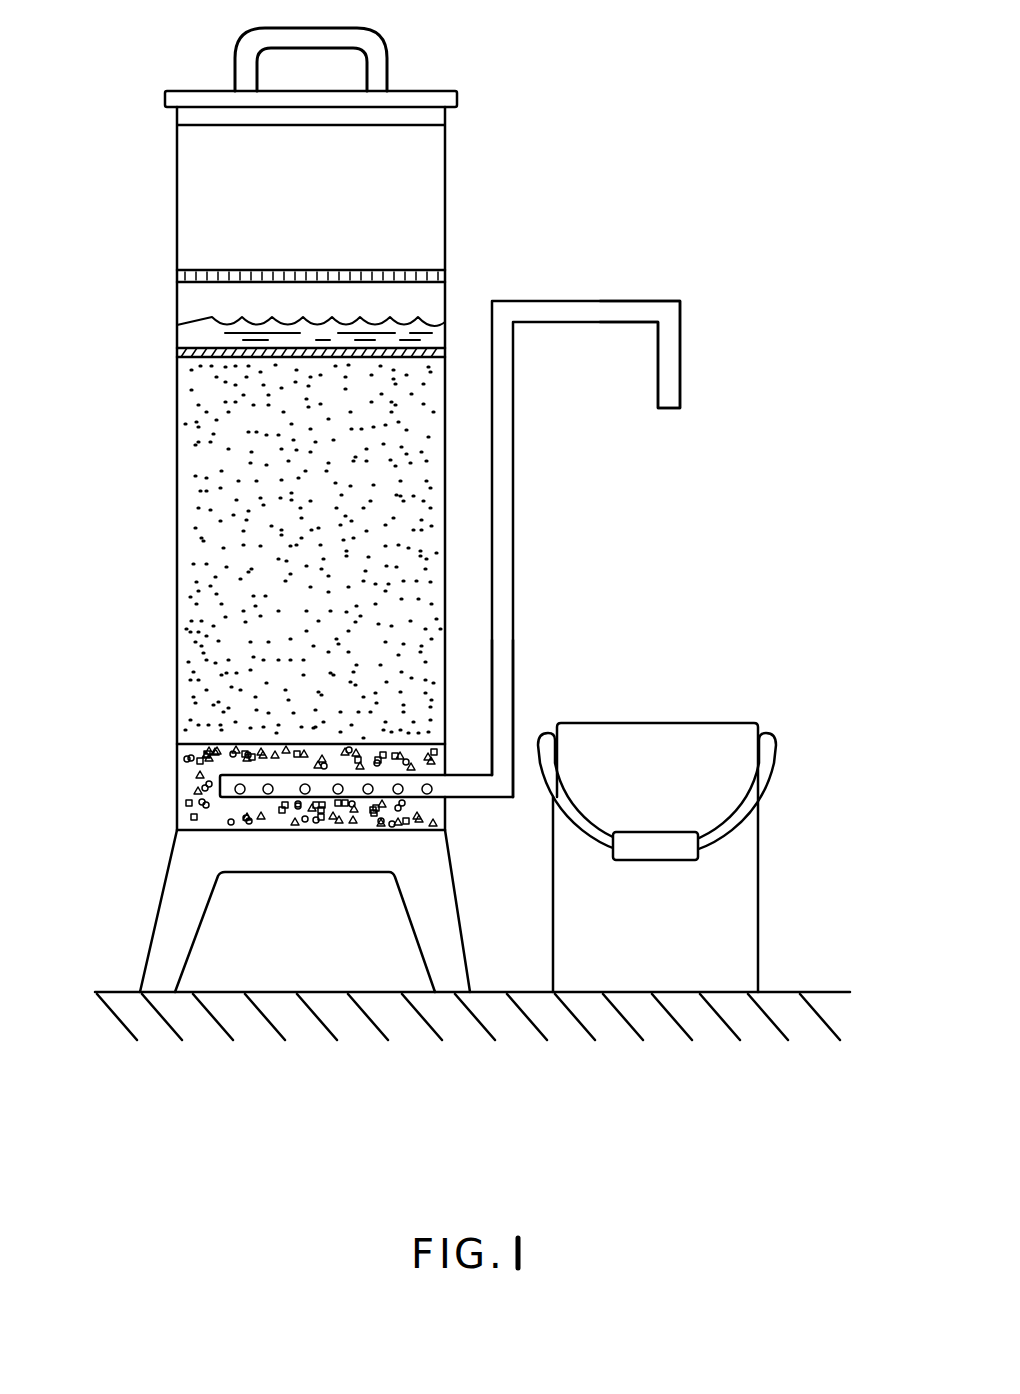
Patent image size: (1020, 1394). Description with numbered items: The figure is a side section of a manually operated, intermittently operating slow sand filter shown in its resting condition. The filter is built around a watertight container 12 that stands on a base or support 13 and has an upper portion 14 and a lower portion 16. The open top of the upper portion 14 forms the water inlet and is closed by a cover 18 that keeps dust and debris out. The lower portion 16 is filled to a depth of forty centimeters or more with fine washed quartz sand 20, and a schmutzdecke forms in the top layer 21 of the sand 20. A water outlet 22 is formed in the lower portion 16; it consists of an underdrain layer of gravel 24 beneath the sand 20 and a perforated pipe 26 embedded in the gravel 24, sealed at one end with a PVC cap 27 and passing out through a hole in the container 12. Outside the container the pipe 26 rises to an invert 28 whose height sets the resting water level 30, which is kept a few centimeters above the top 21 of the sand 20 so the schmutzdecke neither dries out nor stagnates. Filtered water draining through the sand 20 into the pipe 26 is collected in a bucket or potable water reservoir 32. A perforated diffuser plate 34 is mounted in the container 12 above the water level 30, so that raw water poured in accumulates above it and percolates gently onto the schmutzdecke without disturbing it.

The watertight container 12 is at (467, 190).
The base or support 13 is at (158, 878).
The upper portion 14 is at (177, 234).
The lower portion 16 is at (177, 663).
The cover 18 is at (407, 91).
The fine washed quartz sand 20 is at (237, 468).
The top of the sand 21 is at (177, 348).
The water outlet 22 is at (533, 704).
The underdrain layer of gravel 24 is at (185, 752).
The perforated pipe 26 is at (515, 478).
The PVC cap 27 is at (220, 778).
The invert of pipe 28 is at (590, 301).
The water level 30 is at (177, 319).
The bucket or potable water reservoir 32 is at (760, 822).
The diffuser plate 34 is at (412, 270).